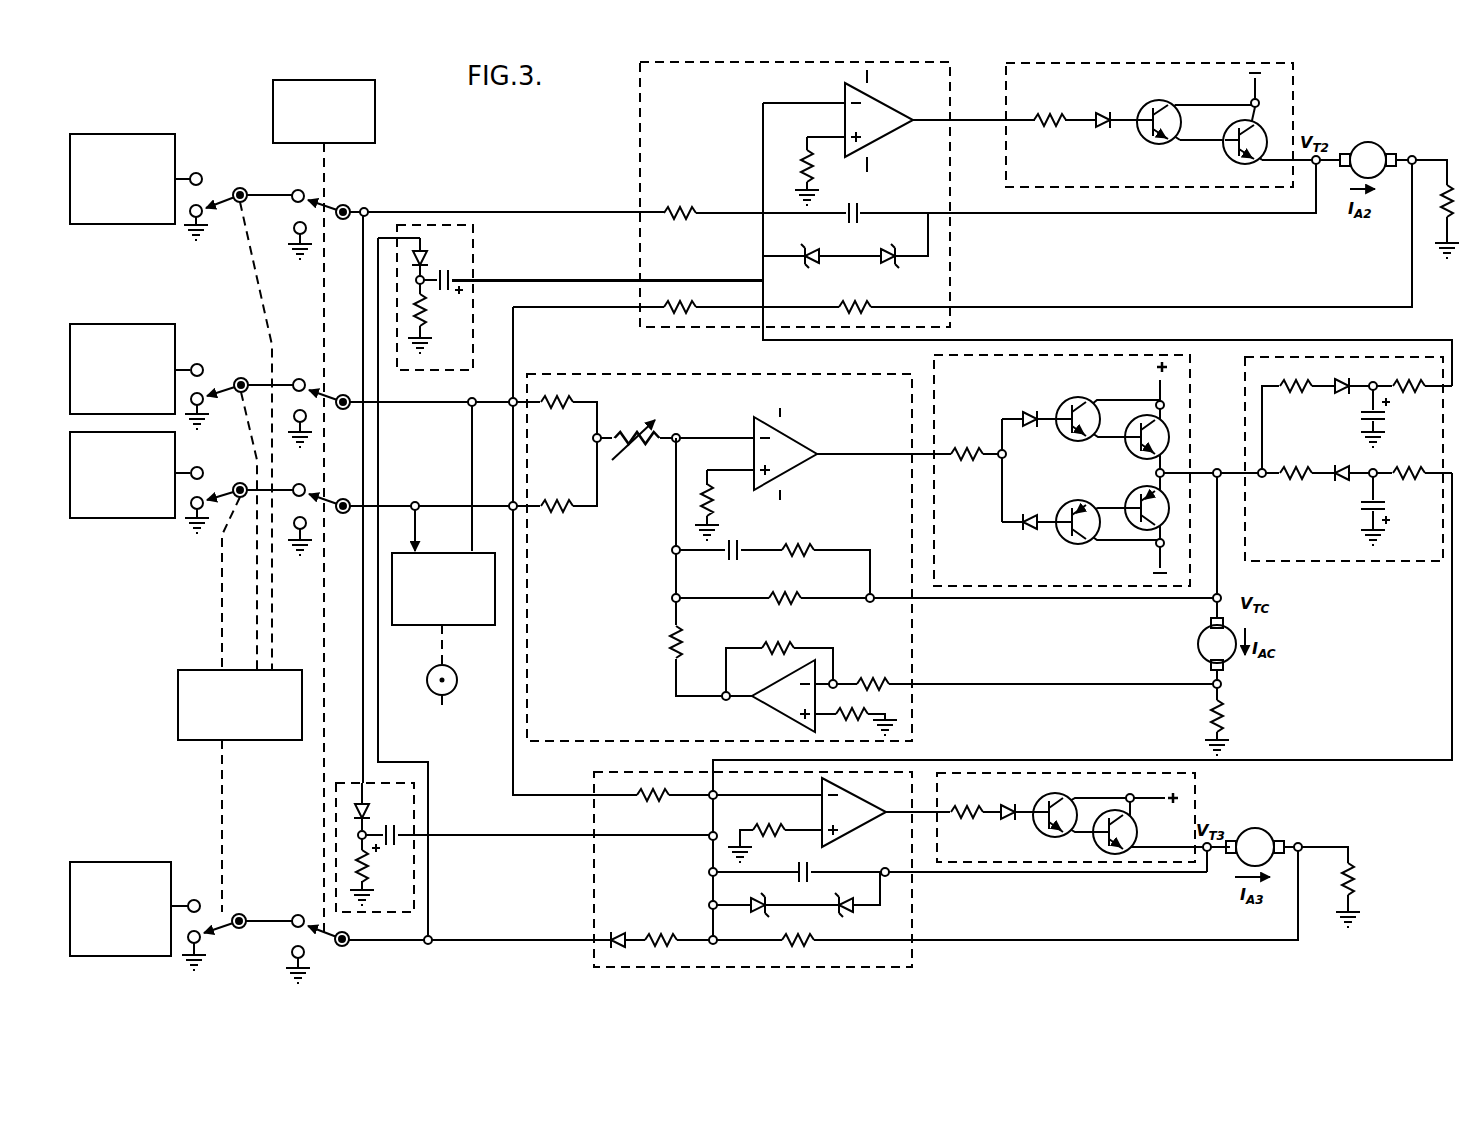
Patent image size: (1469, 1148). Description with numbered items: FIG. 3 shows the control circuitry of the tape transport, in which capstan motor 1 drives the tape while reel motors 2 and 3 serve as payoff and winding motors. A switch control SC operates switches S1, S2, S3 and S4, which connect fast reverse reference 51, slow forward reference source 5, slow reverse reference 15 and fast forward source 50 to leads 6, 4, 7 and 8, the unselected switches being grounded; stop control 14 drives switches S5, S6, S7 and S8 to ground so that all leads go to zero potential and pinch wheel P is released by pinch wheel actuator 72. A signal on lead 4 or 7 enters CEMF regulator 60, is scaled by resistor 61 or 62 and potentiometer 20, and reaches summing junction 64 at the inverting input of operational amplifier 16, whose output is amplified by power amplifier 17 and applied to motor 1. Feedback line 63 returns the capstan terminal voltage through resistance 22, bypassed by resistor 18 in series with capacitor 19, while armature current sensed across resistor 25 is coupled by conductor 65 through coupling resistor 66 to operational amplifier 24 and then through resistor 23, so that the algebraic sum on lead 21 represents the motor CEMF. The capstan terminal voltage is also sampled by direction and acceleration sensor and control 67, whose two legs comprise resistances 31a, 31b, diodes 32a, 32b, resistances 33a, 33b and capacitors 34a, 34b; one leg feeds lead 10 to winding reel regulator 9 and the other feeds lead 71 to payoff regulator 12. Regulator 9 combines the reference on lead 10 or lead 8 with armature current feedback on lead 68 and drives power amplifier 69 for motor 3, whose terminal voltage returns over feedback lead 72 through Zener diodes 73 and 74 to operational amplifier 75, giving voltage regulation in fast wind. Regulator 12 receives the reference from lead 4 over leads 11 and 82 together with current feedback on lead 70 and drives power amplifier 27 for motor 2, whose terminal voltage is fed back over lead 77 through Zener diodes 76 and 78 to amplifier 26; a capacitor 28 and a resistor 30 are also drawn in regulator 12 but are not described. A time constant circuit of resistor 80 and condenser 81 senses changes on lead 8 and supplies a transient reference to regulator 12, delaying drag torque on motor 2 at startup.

The capstan motor 1 is at (1200, 644).
The reel motor 2 is at (1368, 141).
The reel motor 3 is at (1255, 832).
The lead 4 is at (431, 414).
The slow forward reference signal source 5 is at (130, 348).
The lead 6 is at (516, 195).
The lead 7 is at (431, 489).
The lead 8 is at (521, 921).
The regulator 9 is at (735, 869).
The lead 10 is at (1082, 616).
The lead 11 is at (607, 264).
The regulator 12 is at (769, 194).
The stop control 14 is at (345, 111).
The slow reverse reference 15 is at (130, 492).
The operational amplifier 16 is at (764, 473).
The power amplifier 17 is at (1085, 470).
The resistor 18 is at (798, 535).
The capacitor 19 is at (733, 567).
The potentiometer 20 is at (635, 423).
The lead 21 is at (654, 518).
The resistance 22 is at (794, 614).
The resistor 23 is at (651, 642).
The operational amplifier 24 is at (811, 695).
The resistor 25 is at (1234, 727).
The amplifier 26 is at (858, 138).
The power amplifier 27 is at (1173, 125).
The capacitor 28 is at (846, 195).
The resistor 30 is at (856, 291).
The resistance 31a is at (1293, 456).
The resistance 31b is at (1287, 401).
The diode 32a is at (1322, 494).
The diode 32b is at (1331, 400).
The resistance 33a is at (1398, 460).
The resistance 33b is at (1389, 370).
The capacitor 34a is at (1403, 522).
The capacitor 34b is at (1401, 422).
The fast forward reference source 50 is at (129, 888).
The fast reverse reference 51 is at (130, 158).
The CEMF regulator 60 is at (719, 541).
The resistor 61 is at (557, 418).
The resistor 62 is at (557, 488).
The feedback line 63 is at (1043, 614).
The summing junction 64 is at (688, 424).
The conductor 65 is at (1053, 664).
The coupling resistor 66 is at (873, 666).
The direction and acceleration sensor and control 67 is at (1344, 477).
The lead 68 is at (1056, 893).
The power amplifier 69 is at (1087, 817).
The lead 70 is at (1141, 233).
The lead 71 is at (1107, 348).
The pinch wheel actuator 72 is at (730, 728).
The Zener diode 73 is at (862, 916).
The Zener diode 74 is at (745, 916).
The operational amplifier 75 is at (812, 820).
The Zener diode 76 is at (900, 243).
The feedback lead 77 is at (1122, 203).
The Zener diode 78 is at (820, 243).
The resistor 80 is at (439, 318).
The condenser 81 is at (441, 262).
The lead 82 is at (588, 294).
The switch S1 is at (244, 197).
The switch S2 is at (245, 386).
The switch S3 is at (245, 491).
The switch S4 is at (243, 925).
The switch S5 is at (328, 215).
The switch S6 is at (328, 403).
The switch S7 is at (328, 510).
The switch S8 is at (359, 954).
The switch control SC is at (218, 705).
The pinch wheel P is at (442, 698).